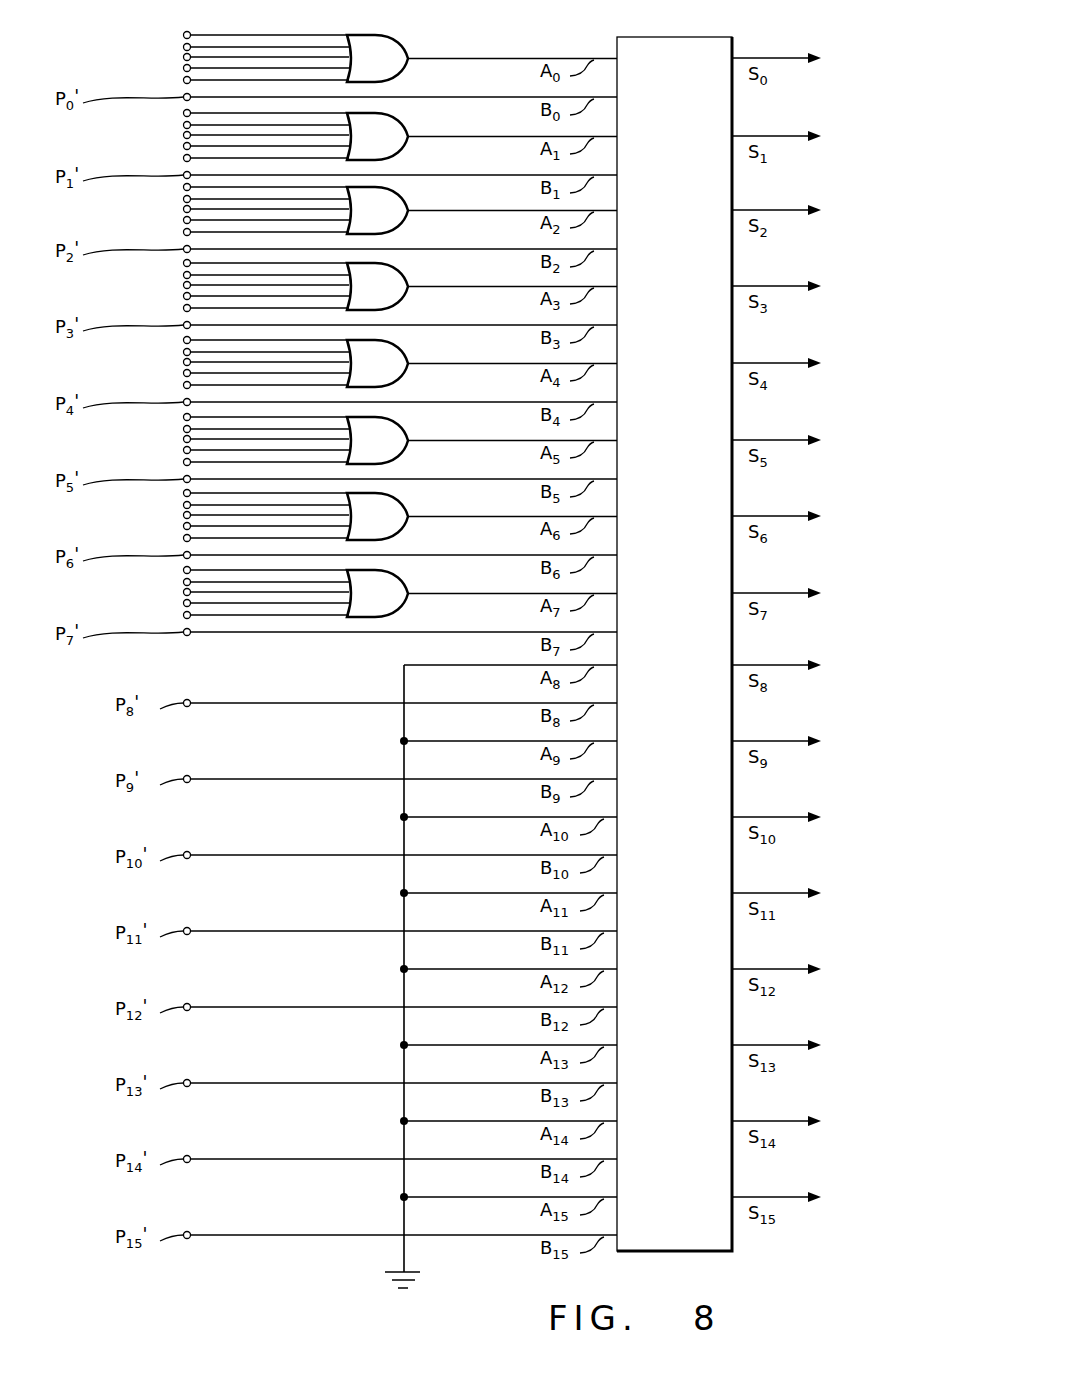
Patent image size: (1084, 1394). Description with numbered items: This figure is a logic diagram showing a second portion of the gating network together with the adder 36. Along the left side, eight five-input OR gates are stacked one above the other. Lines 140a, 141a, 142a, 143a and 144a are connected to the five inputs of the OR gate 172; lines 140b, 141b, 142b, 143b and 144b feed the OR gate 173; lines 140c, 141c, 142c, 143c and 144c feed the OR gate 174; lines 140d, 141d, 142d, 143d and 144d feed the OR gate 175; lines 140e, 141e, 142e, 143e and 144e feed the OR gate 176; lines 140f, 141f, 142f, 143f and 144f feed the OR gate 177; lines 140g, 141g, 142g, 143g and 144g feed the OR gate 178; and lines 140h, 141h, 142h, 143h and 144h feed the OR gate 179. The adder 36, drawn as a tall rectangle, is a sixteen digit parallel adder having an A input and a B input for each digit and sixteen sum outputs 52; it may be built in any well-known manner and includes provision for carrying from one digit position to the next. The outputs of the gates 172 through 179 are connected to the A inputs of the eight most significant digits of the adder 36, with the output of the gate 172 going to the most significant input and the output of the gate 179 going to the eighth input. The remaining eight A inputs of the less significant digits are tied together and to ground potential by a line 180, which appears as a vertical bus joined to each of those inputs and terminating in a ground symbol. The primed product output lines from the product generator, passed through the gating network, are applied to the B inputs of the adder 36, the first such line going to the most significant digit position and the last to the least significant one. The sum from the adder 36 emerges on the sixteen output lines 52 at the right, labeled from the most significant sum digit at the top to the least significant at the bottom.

The adder 36 is at (703, 1245).
The sum outputs 52 is at (822, 136).
The line 180 is at (404, 1257).
The OR gate 172 is at (387, 45).
The OR gate 173 is at (387, 123).
The OR gate 174 is at (387, 197).
The OR gate 175 is at (387, 273).
The OR gate 176 is at (387, 350).
The OR gate 177 is at (387, 427).
The OR gate 178 is at (387, 503).
The OR gate 179 is at (387, 580).
The line 140a is at (234, 34).
The line 141a is at (203, 46).
The line 142a is at (234, 56).
The line 143a is at (203, 68).
The line 144a is at (234, 78).
The line 140b is at (234, 112).
The line 141b is at (203, 124).
The line 142b is at (234, 134).
The line 143b is at (203, 146).
The line 144b is at (234, 156).
The line 140c is at (234, 186).
The line 141c is at (203, 198).
The line 142c is at (234, 208).
The line 143c is at (203, 220).
The line 144c is at (234, 230).
The line 140d is at (234, 262).
The line 141d is at (203, 274).
The line 142d is at (234, 284).
The line 143d is at (203, 296).
The line 144d is at (234, 306).
The line 140e is at (234, 339).
The line 141e is at (203, 351).
The line 142e is at (234, 361).
The line 143e is at (203, 373).
The line 144e is at (234, 383).
The line 140f is at (234, 416).
The line 141f is at (203, 428).
The line 142f is at (234, 438).
The line 143f is at (203, 450).
The line 144f is at (234, 460).
The line 140g is at (234, 492).
The line 141g is at (203, 504).
The line 142g is at (234, 514).
The line 143g is at (203, 526).
The line 144g is at (234, 536).
The line 140h is at (234, 569).
The line 141h is at (203, 581).
The line 142h is at (234, 591).
The line 143h is at (203, 603).
The line 144h is at (234, 613).